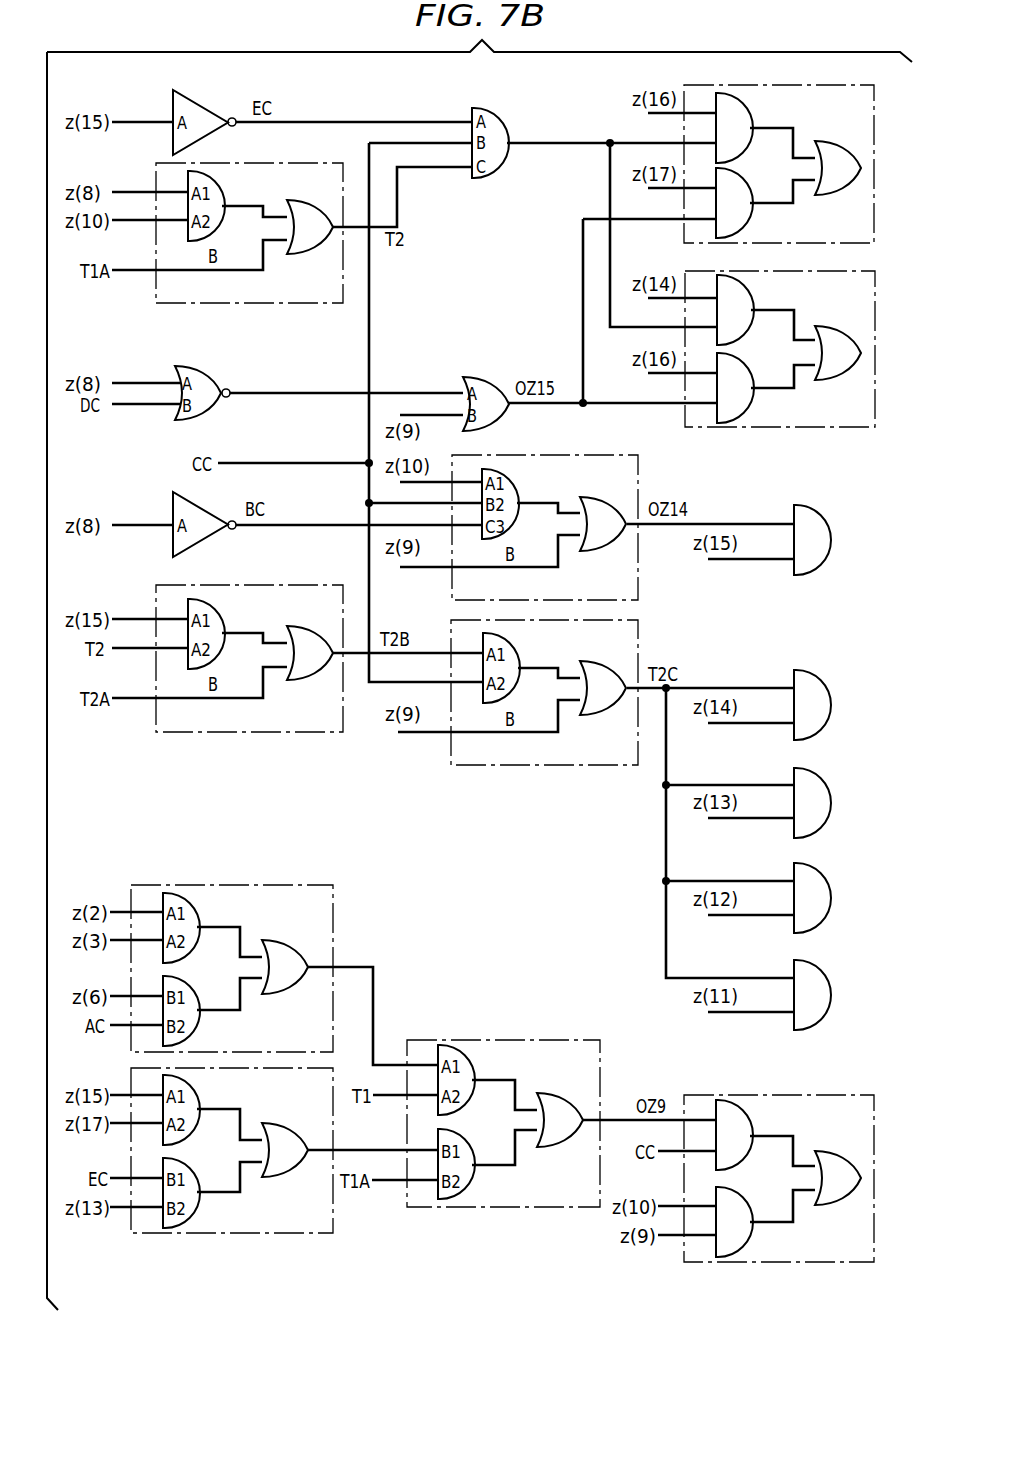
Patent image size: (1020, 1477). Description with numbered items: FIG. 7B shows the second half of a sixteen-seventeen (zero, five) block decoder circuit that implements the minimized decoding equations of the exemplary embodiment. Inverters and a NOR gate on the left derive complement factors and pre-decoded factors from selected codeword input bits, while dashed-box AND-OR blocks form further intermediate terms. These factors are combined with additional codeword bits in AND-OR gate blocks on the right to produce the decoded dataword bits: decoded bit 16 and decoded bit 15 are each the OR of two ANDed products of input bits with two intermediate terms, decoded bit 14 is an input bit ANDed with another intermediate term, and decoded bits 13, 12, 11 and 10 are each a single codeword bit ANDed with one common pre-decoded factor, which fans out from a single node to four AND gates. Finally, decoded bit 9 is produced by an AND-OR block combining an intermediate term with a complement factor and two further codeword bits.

The decoded dataword bit d 16 is at (912, 168).
The decoded dataword bit d 15 is at (860, 353).
The decoded dataword bit d 14 is at (830, 540).
The decoded dataword bit d 13 is at (830, 705).
The decoded dataword bit d 12 is at (830, 801).
The decoded dataword bit d 11 is at (830, 897).
The decoded dataword bit d 10 is at (830, 995).
The decoded dataword bit d 9 is at (860, 1178).